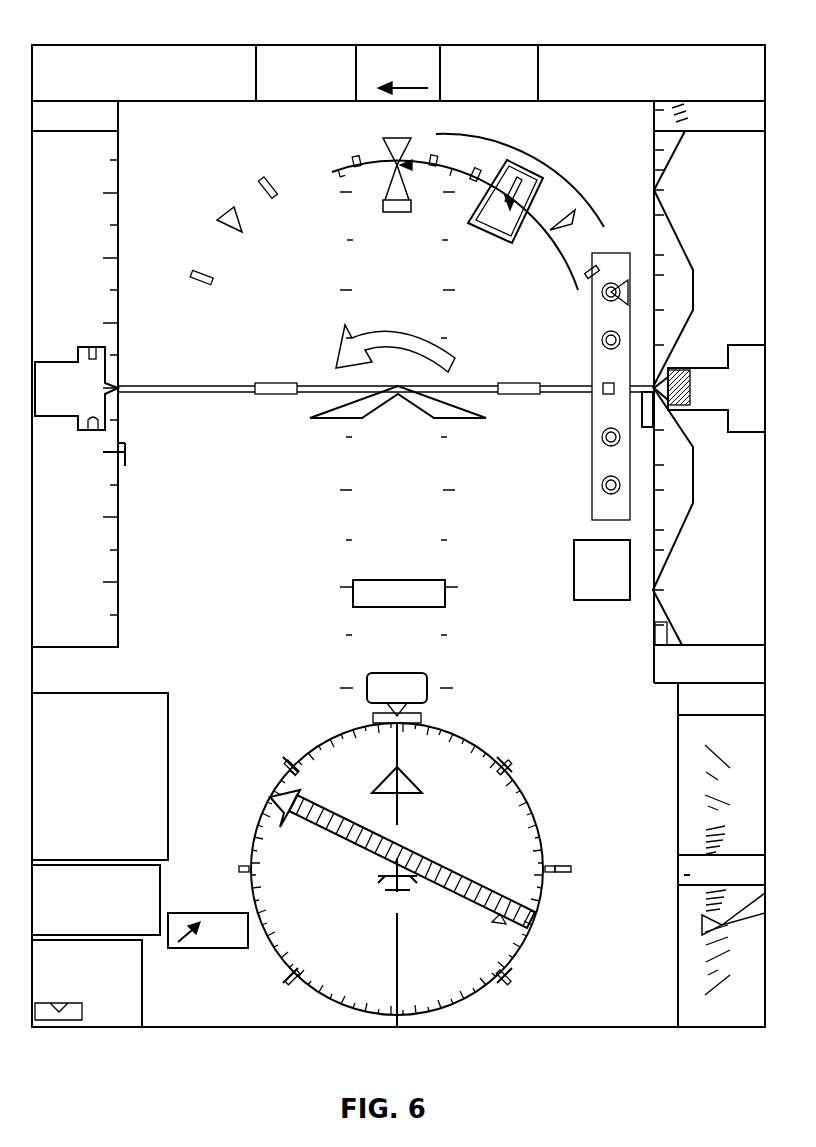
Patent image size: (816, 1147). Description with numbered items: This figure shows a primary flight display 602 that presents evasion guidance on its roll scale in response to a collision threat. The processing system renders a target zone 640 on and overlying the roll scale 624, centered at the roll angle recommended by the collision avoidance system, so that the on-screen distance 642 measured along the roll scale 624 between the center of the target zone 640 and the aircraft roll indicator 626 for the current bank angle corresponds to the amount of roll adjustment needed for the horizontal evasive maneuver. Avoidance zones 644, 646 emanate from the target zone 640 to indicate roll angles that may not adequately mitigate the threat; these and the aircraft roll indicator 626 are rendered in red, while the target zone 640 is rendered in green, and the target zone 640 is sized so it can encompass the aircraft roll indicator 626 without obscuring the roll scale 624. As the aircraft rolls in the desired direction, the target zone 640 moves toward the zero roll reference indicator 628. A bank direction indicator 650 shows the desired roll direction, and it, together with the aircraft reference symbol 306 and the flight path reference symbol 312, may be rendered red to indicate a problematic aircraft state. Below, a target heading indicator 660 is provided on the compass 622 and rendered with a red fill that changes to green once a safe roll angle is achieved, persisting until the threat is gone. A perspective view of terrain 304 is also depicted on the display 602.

The primary flight display 602 is at (183, 128).
The roll scale 624 is at (243, 190).
The aircraft roll indicator 626 is at (395, 214).
The zero roll reference indicator 628 is at (398, 138).
The target zone 640 is at (533, 170).
The on-screen distance 642 is at (463, 187).
The avoidance zone 644 is at (461, 132).
The avoidance zone 646 is at (567, 190).
The bank direction indicator 650 is at (366, 344).
The flight path reference symbol 312 is at (275, 396).
The aircraft reference symbol 306 is at (480, 420).
The terrain 304 is at (606, 756).
The target heading indicator 660 is at (458, 875).
The compass 622 is at (562, 870).